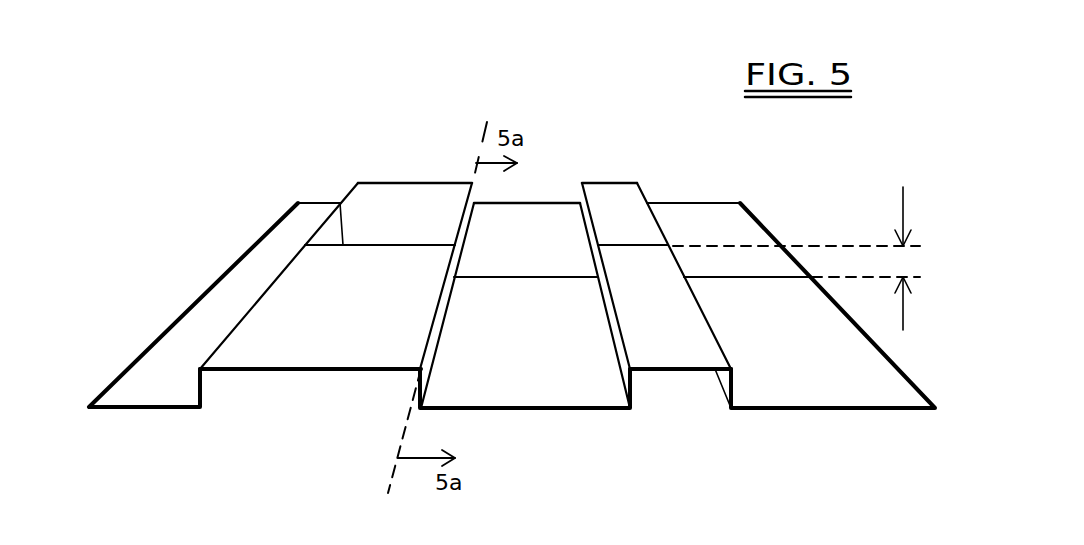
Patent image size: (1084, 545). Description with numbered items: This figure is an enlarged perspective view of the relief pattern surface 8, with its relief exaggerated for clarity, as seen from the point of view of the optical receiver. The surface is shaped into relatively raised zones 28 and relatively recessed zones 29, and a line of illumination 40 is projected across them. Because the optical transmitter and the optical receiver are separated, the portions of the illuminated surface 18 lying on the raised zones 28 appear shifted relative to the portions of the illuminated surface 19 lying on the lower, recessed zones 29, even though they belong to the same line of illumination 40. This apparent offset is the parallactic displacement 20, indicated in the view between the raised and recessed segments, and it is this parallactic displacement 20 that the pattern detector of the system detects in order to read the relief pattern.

The relief pattern surface 8 is at (182, 343).
The illuminated surface portion on raised portions 18 is at (633, 245).
The illuminated surface portion on lower portions 19 is at (747, 272).
The parallactic displacement 20 is at (900, 300).
The relatively raised zone 28 is at (273, 350).
The relatively recessed zone 29 is at (567, 383).
The line of illumination 40 is at (340, 203).